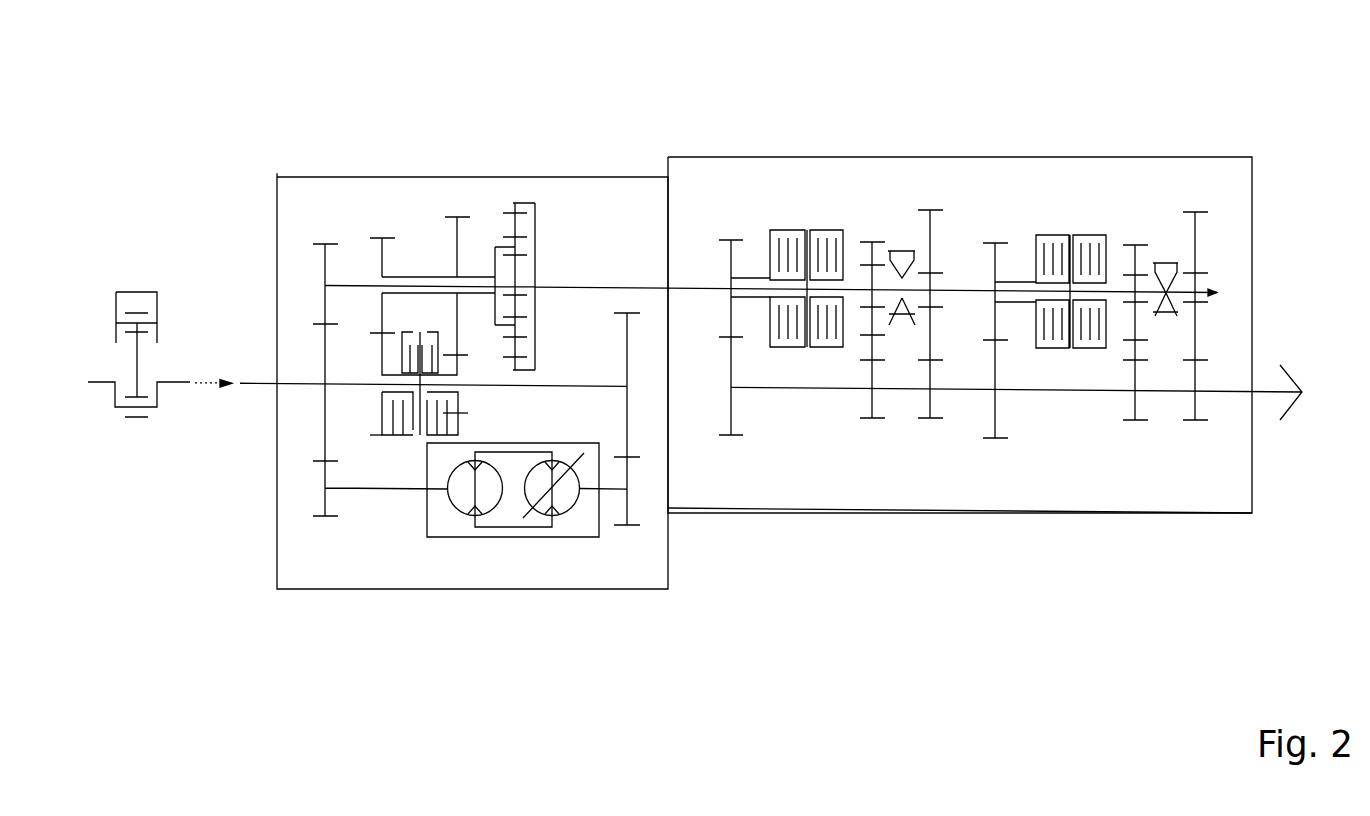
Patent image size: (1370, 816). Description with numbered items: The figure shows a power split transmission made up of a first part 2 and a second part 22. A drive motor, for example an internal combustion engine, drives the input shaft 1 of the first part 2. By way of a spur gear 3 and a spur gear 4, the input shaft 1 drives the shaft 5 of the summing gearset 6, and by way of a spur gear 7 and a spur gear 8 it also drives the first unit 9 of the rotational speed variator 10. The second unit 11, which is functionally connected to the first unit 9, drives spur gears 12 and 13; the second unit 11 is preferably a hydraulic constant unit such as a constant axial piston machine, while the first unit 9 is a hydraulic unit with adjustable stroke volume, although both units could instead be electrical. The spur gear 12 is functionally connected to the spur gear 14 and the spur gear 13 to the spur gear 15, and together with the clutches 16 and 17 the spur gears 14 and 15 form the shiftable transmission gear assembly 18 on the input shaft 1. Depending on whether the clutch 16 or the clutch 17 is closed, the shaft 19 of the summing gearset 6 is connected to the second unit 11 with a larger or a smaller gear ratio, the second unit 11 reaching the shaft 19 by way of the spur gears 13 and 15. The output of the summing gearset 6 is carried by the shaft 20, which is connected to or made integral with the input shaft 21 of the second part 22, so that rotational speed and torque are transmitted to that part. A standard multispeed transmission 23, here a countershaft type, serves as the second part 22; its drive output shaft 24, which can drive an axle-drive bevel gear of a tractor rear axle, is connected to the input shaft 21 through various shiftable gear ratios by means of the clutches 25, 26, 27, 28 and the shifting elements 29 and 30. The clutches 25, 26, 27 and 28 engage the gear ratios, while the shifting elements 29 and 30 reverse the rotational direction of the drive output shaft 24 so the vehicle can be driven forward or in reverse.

The input shaft 1 is at (346, 306).
The first part 2 is at (365, 399).
The spur gear 3 is at (423, 552).
The spur gear 4 is at (463, 156).
The shaft 5 is at (463, 181).
The summing gearset 6 is at (555, 203).
The spur gear 7 is at (663, 506).
The spur gear 8 is at (632, 578).
The first unit 9 is at (554, 575).
The rotational speed variator 10 is at (527, 570).
The second unit 11 is at (468, 579).
The spur gear 12 is at (252, 473).
The spur gear 13 is at (376, 510).
The spur gear 14 is at (384, 234).
The spur gear 15 is at (192, 241).
The clutch 16 is at (368, 204).
The clutch 17 is at (397, 178).
The shiftable transmission gear assembly 18 is at (214, 444).
The shaft 19 is at (354, 160).
The shaft 20 is at (606, 163).
The input shaft 21 is at (719, 237).
The second part 22 is at (960, 604).
The multispeed transmission 23 is at (960, 277).
The drive output shaft 24 is at (1025, 232).
The clutch 25 is at (788, 193).
The clutch 26 is at (840, 193).
The clutch 27 is at (1082, 195).
The clutch 28 is at (1133, 196).
The shifting element 29 is at (898, 229).
The shifting element 30 is at (1190, 232).